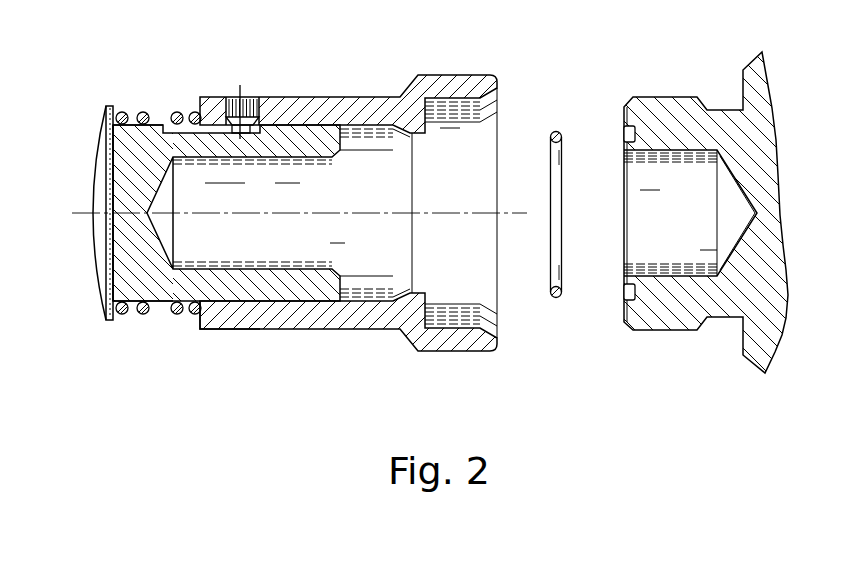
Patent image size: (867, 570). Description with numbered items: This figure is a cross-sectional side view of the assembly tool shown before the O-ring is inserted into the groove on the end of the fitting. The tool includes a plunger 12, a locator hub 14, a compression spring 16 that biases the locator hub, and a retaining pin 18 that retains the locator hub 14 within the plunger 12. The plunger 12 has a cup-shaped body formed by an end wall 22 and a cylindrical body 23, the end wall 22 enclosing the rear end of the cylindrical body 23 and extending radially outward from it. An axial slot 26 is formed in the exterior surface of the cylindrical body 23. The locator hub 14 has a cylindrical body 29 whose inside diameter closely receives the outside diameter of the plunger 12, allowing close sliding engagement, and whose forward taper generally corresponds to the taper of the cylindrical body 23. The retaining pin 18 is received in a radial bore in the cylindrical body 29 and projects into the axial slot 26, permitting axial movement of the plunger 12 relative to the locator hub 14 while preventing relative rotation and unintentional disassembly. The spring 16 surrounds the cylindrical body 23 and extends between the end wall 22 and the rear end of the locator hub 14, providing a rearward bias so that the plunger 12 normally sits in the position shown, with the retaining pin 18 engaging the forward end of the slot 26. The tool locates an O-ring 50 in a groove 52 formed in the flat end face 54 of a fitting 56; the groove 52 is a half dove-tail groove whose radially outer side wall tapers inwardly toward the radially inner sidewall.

The plunger 12 is at (158, 310).
The locator hub 14 is at (302, 338).
The compression spring 16 is at (143, 113).
The retaining pin 18 is at (248, 96).
The end wall 22 is at (100, 132).
The cylindrical body 23 is at (140, 133).
The axial slot 26 is at (252, 137).
The cylindrical body 29 is at (228, 325).
The O-ring 50 is at (555, 130).
The groove 52 is at (623, 133).
The flat end face 54 is at (622, 278).
The fitting 56 is at (723, 122).